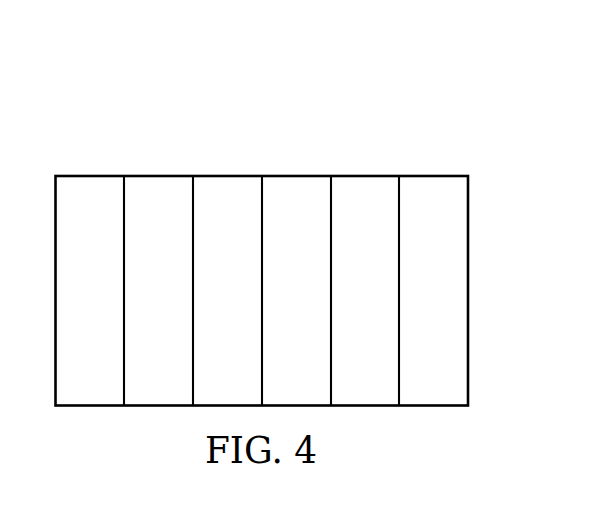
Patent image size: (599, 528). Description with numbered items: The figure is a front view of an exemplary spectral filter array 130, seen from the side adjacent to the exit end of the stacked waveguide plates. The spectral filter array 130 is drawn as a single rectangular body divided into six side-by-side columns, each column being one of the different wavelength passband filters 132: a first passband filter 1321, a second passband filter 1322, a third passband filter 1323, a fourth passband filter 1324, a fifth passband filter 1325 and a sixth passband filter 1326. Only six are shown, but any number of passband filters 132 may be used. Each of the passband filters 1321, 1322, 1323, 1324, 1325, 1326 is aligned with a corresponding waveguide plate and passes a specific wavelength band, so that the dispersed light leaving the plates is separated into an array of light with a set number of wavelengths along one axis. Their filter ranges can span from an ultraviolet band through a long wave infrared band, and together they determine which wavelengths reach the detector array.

The spectral filter array 130 is at (206, 72).
The passband filters 132 is at (262, 259).
The first wavelength passband filter 1321 is at (121, 163).
The second wavelength passband filter 1322 is at (190, 163).
The third wavelength passband filter 1323 is at (259, 163).
The fourth wavelength passband filter 1324 is at (328, 163).
The fifth wavelength passband filter 1325 is at (397, 163).
The sixth wavelength passband filter 1326 is at (465, 163).